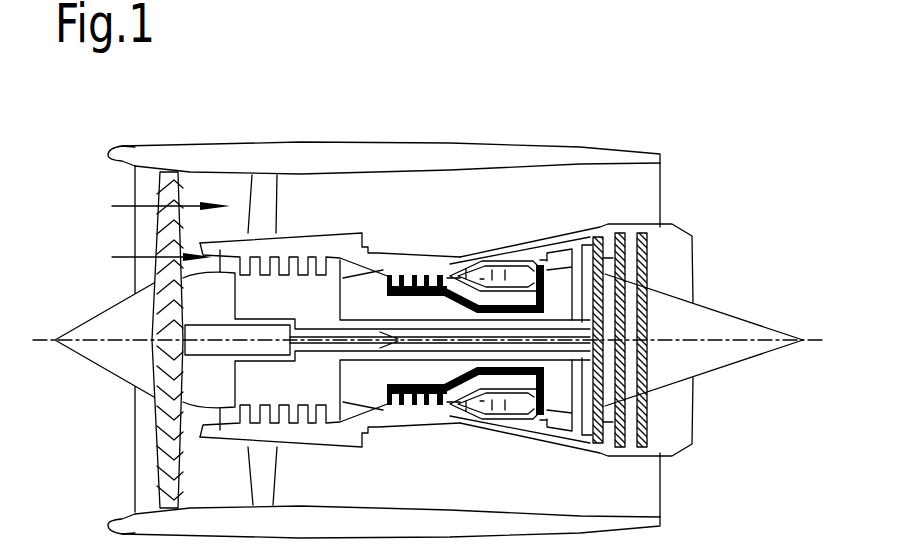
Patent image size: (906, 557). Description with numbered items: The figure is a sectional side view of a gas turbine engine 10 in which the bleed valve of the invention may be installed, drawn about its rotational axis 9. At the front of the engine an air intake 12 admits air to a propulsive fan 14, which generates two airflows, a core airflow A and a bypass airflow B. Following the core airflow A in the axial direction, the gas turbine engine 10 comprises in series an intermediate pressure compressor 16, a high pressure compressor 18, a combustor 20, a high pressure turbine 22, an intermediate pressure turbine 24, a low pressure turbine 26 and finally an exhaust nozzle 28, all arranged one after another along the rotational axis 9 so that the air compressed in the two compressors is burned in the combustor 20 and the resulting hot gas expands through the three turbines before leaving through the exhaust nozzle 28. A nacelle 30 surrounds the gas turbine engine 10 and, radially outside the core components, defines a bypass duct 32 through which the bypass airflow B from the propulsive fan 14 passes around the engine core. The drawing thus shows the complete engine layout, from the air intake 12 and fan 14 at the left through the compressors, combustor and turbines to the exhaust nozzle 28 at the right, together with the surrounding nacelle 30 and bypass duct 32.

The rotational axis 9 is at (692, 342).
The gas turbine engine 10 is at (92, 145).
The air intake 12 is at (145, 187).
The propulsive fan 14 is at (160, 172).
The intermediate pressure compressor 16 is at (278, 297).
The high pressure compressor 18 is at (407, 277).
The combustor 20 is at (500, 275).
The high pressure turbine 22 is at (537, 263).
The intermediate pressure turbine 24 is at (585, 267).
The low pressure turbine 26 is at (652, 248).
The exhaust nozzle 28 is at (672, 273).
The nacelle 30 is at (238, 166).
The bypass duct 32 is at (445, 208).
The airflow A is at (149, 256).
The airflow B is at (160, 204).